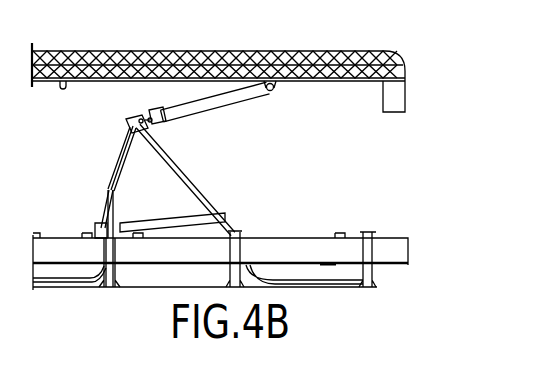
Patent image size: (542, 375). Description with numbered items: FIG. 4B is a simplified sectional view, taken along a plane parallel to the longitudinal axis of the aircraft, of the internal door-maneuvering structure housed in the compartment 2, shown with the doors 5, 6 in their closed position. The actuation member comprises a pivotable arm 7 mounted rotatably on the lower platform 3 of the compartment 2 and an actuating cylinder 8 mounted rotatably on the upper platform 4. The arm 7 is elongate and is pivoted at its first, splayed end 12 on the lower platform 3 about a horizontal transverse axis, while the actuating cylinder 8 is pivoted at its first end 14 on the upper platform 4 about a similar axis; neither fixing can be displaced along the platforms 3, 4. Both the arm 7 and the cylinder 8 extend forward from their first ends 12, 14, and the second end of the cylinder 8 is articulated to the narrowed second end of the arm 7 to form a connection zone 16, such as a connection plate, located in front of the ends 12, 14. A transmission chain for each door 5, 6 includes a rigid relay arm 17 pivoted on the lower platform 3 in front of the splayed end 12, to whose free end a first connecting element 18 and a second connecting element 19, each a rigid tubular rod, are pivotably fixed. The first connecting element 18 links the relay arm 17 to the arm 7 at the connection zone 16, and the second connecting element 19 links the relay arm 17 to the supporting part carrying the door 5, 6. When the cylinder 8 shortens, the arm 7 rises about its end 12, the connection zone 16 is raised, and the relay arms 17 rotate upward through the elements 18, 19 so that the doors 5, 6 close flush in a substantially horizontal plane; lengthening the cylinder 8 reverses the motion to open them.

The compartment 2 is at (303, 158).
The lower platform 3 is at (307, 253).
The upper platform 4 is at (318, 60).
The door 5 is at (79, 286).
The door 6 is at (75, 284).
The pivotable arm 7 is at (185, 180).
The actuating cylinder 8 is at (218, 101).
The first, splayed end 12 is at (235, 233).
The first end 14 is at (269, 82).
The connection zone 16 is at (128, 118).
The relay arm 17 is at (100, 228).
The first connecting element 18 is at (114, 162).
The second connecting element 19 is at (105, 212).